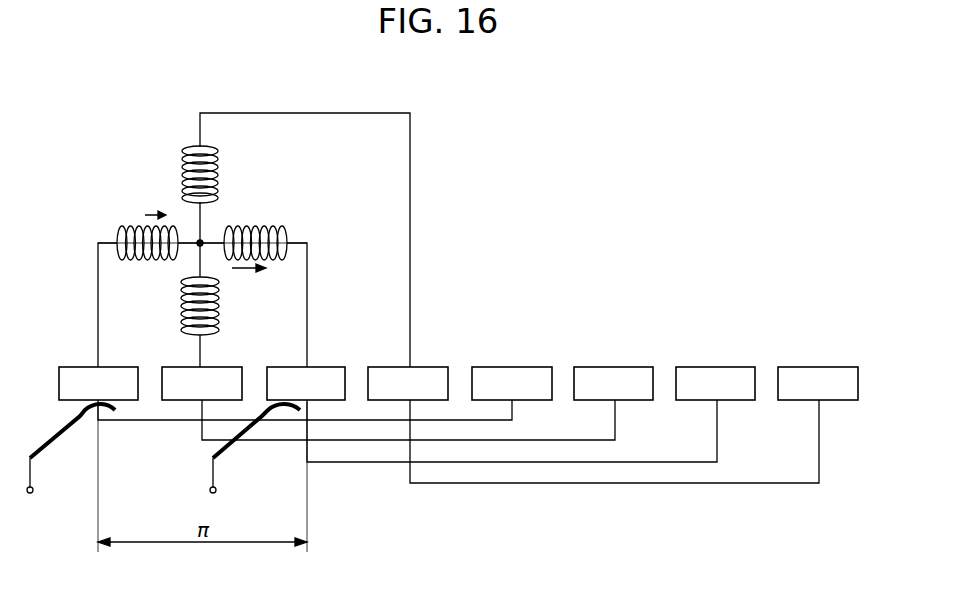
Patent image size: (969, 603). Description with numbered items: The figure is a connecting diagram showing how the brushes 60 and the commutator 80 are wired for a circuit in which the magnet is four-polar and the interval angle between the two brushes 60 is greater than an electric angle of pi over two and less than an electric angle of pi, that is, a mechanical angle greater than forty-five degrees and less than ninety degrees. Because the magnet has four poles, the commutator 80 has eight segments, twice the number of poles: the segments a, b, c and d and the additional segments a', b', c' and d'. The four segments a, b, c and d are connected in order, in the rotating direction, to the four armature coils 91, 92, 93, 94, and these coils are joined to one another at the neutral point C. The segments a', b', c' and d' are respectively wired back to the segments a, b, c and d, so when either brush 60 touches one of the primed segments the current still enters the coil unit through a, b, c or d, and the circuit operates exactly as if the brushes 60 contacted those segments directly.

The brushes 60 is at (43, 457).
The commutator 80 is at (592, 317).
The armature coil 91 is at (138, 228).
The armature coil 92 is at (221, 306).
The armature coil 93 is at (253, 227).
The armature coil 94 is at (218, 170).
The neutral point C is at (203, 241).